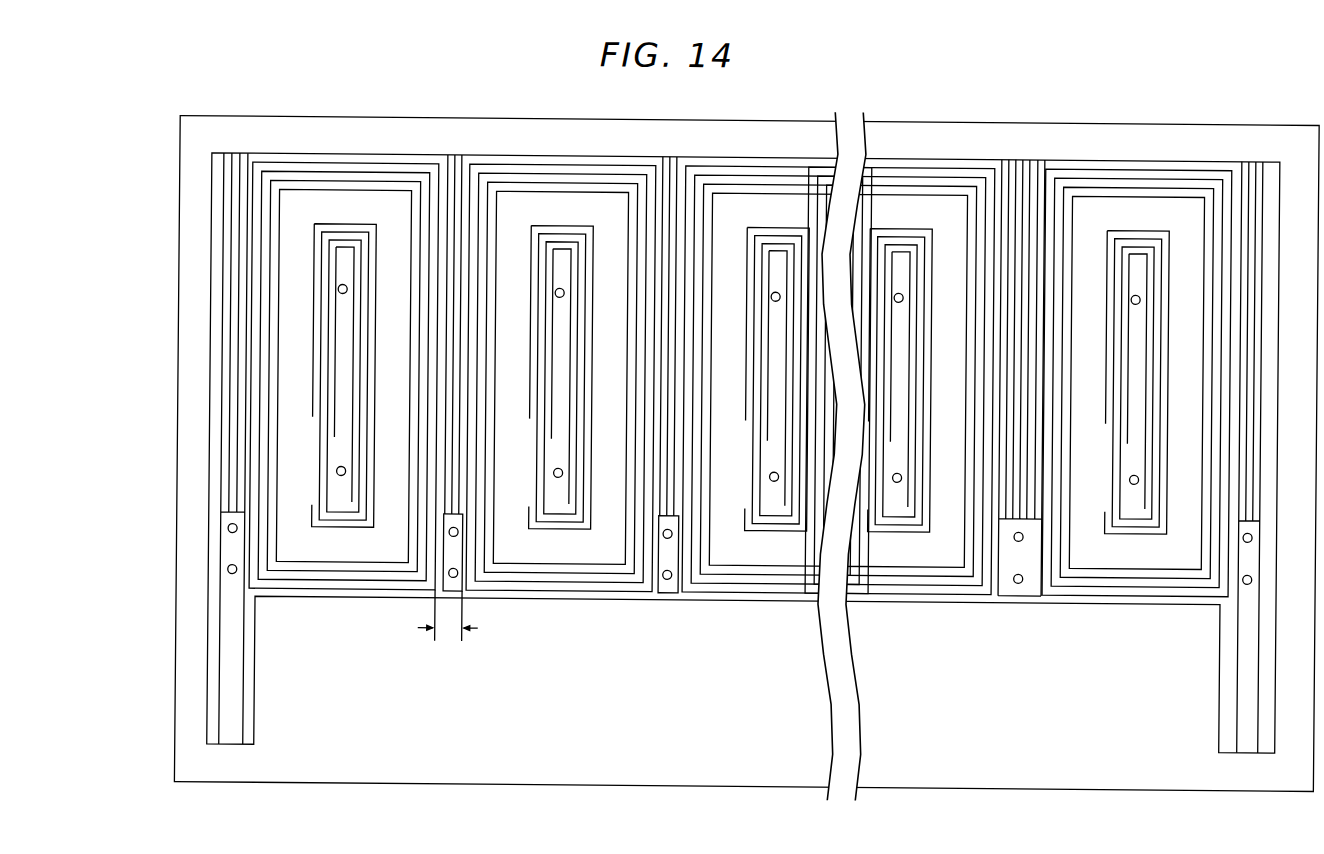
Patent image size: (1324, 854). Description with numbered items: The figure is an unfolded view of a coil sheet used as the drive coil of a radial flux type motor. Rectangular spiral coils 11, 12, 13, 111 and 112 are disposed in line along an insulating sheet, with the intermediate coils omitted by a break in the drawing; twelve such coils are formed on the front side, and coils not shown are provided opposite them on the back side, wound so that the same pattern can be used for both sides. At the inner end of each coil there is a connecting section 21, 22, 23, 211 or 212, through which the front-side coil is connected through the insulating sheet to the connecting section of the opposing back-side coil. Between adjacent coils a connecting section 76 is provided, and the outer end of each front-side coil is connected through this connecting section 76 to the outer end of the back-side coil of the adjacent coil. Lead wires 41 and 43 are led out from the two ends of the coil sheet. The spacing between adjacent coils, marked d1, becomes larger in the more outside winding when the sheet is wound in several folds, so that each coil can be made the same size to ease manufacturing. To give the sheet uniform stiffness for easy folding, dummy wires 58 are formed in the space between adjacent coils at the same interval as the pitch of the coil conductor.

The coil 11 is at (333, 173).
The connecting section 21 is at (347, 253).
The coil 12 is at (557, 173).
The connecting section 22 is at (564, 258).
The coil 13 is at (761, 173).
The connecting section 23 is at (780, 258).
The coil 111 is at (900, 175).
The connecting section 211 is at (905, 258).
The coil 112 is at (1122, 175).
The connecting section 212 is at (1142, 258).
The dummy wires 58 is at (666, 150).
The connecting section 76 is at (671, 586).
The lead wire 41 is at (236, 712).
The lead wire 43 is at (1245, 719).
The spacing between adjacent coils d1 is at (448, 616).